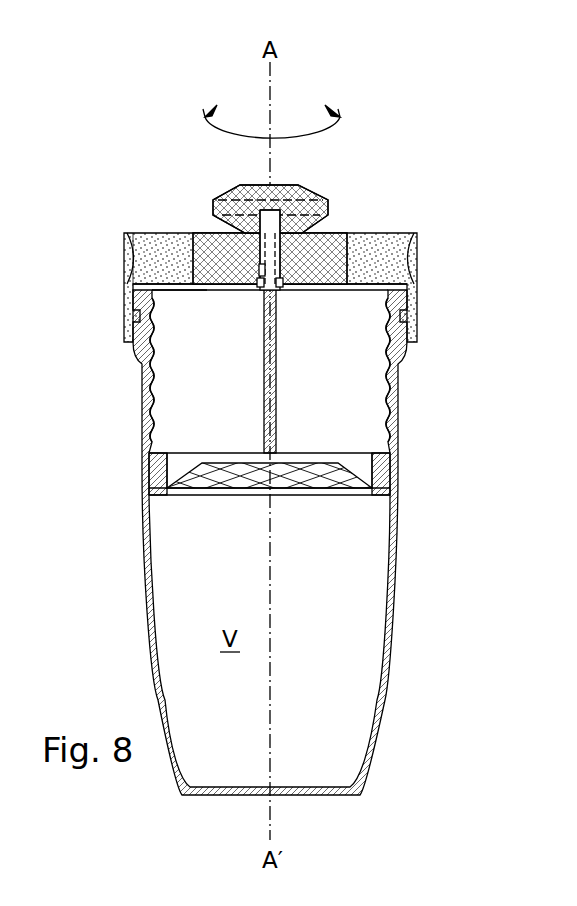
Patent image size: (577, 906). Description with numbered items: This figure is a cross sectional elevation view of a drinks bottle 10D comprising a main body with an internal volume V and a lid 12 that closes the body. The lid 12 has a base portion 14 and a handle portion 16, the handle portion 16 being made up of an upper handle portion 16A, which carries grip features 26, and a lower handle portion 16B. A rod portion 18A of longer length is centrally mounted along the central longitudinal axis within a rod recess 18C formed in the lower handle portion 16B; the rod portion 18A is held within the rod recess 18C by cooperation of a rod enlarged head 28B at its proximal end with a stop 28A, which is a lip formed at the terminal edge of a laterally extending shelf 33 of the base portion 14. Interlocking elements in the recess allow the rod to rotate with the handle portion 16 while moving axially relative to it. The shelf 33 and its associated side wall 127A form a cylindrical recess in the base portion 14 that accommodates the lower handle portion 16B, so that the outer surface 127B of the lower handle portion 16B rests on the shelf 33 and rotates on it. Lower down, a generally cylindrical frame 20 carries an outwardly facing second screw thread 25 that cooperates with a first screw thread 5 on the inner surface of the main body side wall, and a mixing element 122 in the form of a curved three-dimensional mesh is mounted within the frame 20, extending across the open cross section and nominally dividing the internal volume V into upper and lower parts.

The drinks bottle 10D is at (392, 126).
The lid 12 is at (288, 241).
The base portion 14 is at (303, 267).
The handle portion 16 is at (338, 212).
The upper handle portion 16A is at (326, 192).
The lower handle portion 16B is at (325, 233).
The rod portion 18A is at (277, 347).
The rod recess 18C is at (280, 246).
The frame 20 is at (388, 470).
The second screw thread 25 is at (168, 493).
The grip features 26 is at (417, 251).
The stop 28A is at (260, 290).
The rod enlarged head 28B is at (264, 270).
The shelf 33 is at (323, 291).
The first screw thread 5 is at (155, 419).
The mixing element 122 is at (297, 462).
The side wall 127A is at (192, 258).
The outer surface 127B is at (207, 289).